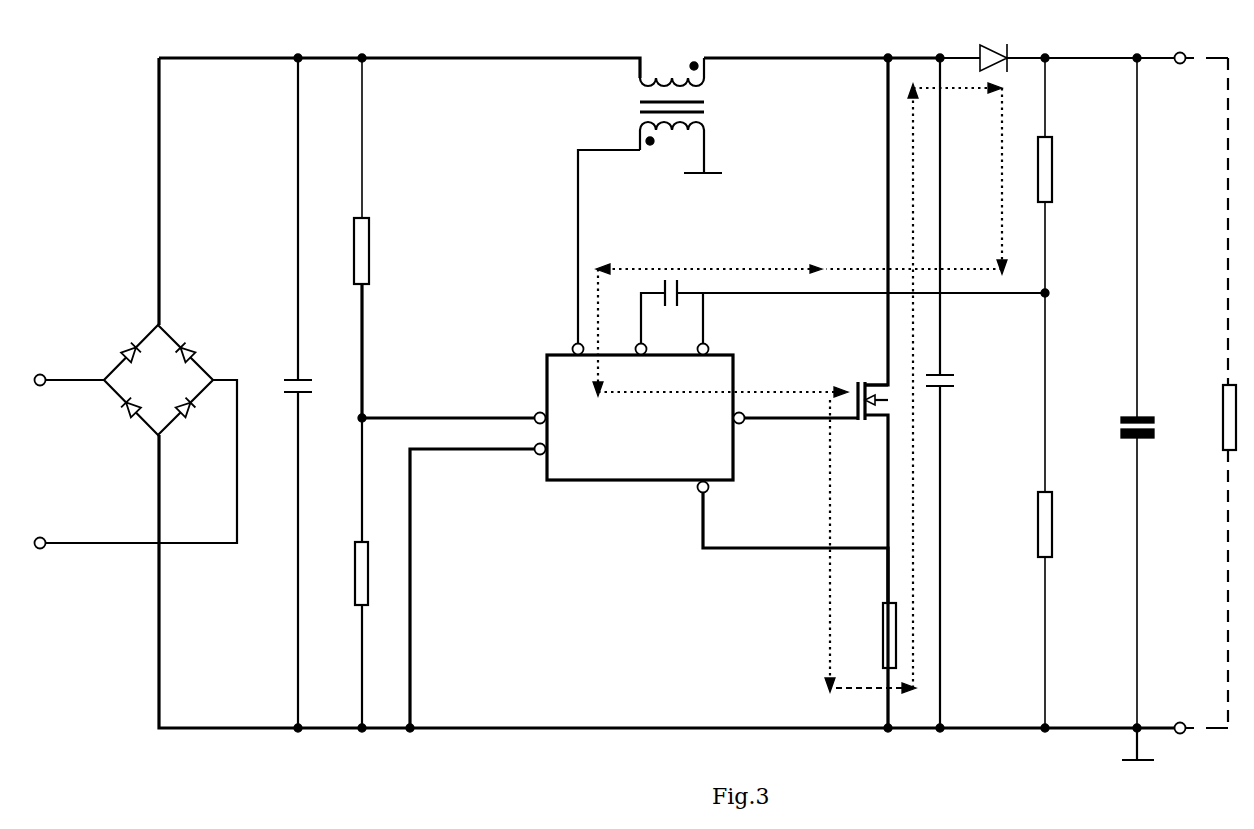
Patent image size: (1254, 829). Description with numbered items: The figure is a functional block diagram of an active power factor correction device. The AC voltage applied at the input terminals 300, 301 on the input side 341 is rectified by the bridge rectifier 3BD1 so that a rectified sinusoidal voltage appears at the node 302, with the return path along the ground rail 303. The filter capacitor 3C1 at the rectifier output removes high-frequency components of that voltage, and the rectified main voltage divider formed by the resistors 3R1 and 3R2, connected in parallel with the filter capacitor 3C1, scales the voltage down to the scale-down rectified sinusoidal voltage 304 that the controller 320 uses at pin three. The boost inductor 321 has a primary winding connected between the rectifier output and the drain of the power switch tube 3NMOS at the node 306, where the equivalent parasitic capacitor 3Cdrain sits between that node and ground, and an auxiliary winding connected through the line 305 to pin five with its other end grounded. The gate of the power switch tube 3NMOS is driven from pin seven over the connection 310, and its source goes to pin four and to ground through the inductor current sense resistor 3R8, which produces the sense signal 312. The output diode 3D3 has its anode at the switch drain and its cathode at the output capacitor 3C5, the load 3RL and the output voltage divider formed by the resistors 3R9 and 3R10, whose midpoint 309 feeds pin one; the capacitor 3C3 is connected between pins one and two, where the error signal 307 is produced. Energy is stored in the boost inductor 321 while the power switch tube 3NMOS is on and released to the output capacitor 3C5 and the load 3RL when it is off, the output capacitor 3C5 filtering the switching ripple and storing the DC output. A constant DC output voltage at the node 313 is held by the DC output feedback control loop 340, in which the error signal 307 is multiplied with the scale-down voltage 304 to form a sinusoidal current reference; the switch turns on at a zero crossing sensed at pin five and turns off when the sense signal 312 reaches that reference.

The AC input terminal 300 is at (67, 369).
The AC input terminal 301 is at (133, 464).
The node 302 is at (399, 181).
The ground rail 303 is at (693, 597).
The scale-down rectified sinusoidal voltage 304 is at (446, 410).
The auxiliary winding supply node to pin 5 305 is at (589, 247).
The node 306 is at (822, 211).
The error signal 307 is at (614, 332).
The feedback node 309 is at (863, 285).
The gate drive signal path 310 is at (757, 540).
The sense signal 312 is at (955, 385).
The node 313 is at (1134, 50).
The controller 320 is at (640, 418).
The boost inductor 321 is at (691, 115).
The DC output feedback control loop 340 is at (801, 181).
The input stage region 341 is at (431, 177).
The bridge rectifier 3BD1 is at (158, 371).
The filter capacitor 3C1 is at (309, 393).
The resistor 3R1 is at (379, 238).
The resistor 3R2 is at (344, 573).
The capacitor 3C3 is at (672, 297).
The power switch tube 3NMOS is at (816, 540).
The equivalent parasitic capacitor 3Cdrain is at (973, 391).
The output diode 3D3 is at (992, 46).
The inductor current sense resistor 3R8 is at (799, 610).
The resistor 3R9 is at (1064, 175).
The resistor 3R10 is at (1070, 510).
The output capacitor 3C5 is at (1120, 393).
The load 3RL is at (1212, 393).